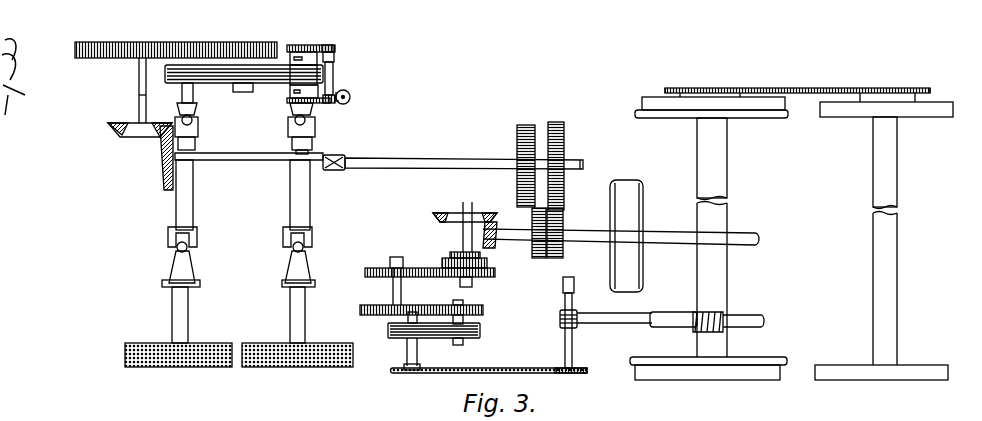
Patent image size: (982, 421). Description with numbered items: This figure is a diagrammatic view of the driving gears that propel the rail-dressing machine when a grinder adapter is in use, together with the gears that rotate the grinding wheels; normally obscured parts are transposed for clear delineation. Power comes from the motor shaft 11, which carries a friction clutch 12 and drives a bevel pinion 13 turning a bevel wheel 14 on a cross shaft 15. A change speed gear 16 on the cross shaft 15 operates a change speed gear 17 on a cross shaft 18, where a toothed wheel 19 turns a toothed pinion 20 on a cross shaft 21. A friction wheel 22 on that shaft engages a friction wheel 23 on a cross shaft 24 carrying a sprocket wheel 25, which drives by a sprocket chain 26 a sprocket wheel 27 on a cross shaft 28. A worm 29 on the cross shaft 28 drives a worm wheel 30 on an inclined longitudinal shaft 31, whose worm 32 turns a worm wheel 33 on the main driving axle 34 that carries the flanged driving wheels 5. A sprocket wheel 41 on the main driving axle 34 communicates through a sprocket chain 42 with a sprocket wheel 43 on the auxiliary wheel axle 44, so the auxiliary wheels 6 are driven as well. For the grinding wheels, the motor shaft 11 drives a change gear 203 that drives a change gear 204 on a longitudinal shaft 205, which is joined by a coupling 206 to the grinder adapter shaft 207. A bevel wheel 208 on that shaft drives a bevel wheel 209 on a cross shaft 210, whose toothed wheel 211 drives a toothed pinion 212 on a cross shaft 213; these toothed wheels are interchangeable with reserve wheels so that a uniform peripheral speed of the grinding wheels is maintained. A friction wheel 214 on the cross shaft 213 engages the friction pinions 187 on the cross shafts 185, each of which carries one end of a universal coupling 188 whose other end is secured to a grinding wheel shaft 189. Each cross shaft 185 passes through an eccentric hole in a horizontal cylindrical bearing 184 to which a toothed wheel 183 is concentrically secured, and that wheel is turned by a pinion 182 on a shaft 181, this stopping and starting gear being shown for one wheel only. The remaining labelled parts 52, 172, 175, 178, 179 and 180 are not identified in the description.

The driving wheels 5 is at (672, 106).
The auxiliary wheels 6 is at (840, 108).
The motor shaft 11 is at (668, 240).
The friction clutch 12 is at (626, 236).
The bevel pinion 13 is at (495, 243).
The bevel wheel 14 is at (448, 213).
The cross shaft 15 is at (472, 208).
The change speed gear 16 is at (490, 274).
The change speed gear 17 is at (367, 268).
The cross shaft 18 is at (396, 257).
The toothed wheel 19 is at (416, 305).
The toothed pinion 20 is at (484, 310).
The cross shaft 21 is at (463, 320).
The friction wheel 22 is at (466, 340).
The friction wheel 23 is at (388, 330).
The cross shaft 24 is at (407, 353).
The sprocket wheel 25 is at (421, 367).
The sprocket chain 26 is at (523, 368).
The sprocket wheel 27 is at (585, 368).
The cross shaft 28 is at (573, 298).
The worm 29 is at (560, 318).
The worm wheel 30 is at (563, 284).
The inclined longitudinal shaft 31 is at (627, 320).
The worm 32 is at (694, 316).
The worm wheel 33 is at (750, 320).
The main driving axle 34 is at (711, 237).
The sprocket wheel 41 is at (668, 89).
The sprocket chain 42 is at (800, 90).
The sprocket wheel 43 is at (928, 90).
The auxiliary wheel axle 44 is at (876, 191).
The worm 52 is at (708, 322).
The base block 172 is at (143, 352).
The base block 175 is at (255, 352).
The wheel 178 is at (350, 97).
The pin 179 is at (348, 102).
The pin 180 is at (345, 92).
The shaft 181 is at (334, 72).
The pinion 182 is at (336, 50).
The toothed wheel 183 is at (312, 104).
The horizontal cylindrical bearing 184 is at (292, 54).
The cross shaft 185 is at (193, 93).
The friction pinion 187 is at (185, 85).
The universal coupling 188 is at (198, 128).
The grinding wheel shaft 189 is at (178, 305).
The change gear 203 is at (563, 246).
The change gear 204 is at (517, 150).
The longitudinal shaft 205 is at (432, 159).
The coupling 206 is at (348, 162).
The grinder adapter shaft 207 is at (250, 160).
The bevel wheel 208 is at (162, 165).
The bevel wheel 209 is at (128, 133).
The cross shaft 210 is at (139, 100).
The toothed wheel 211 is at (115, 58).
The toothed pinion 212 is at (280, 62).
The cross shaft 213 is at (243, 92).
The friction wheel 214 is at (232, 72).